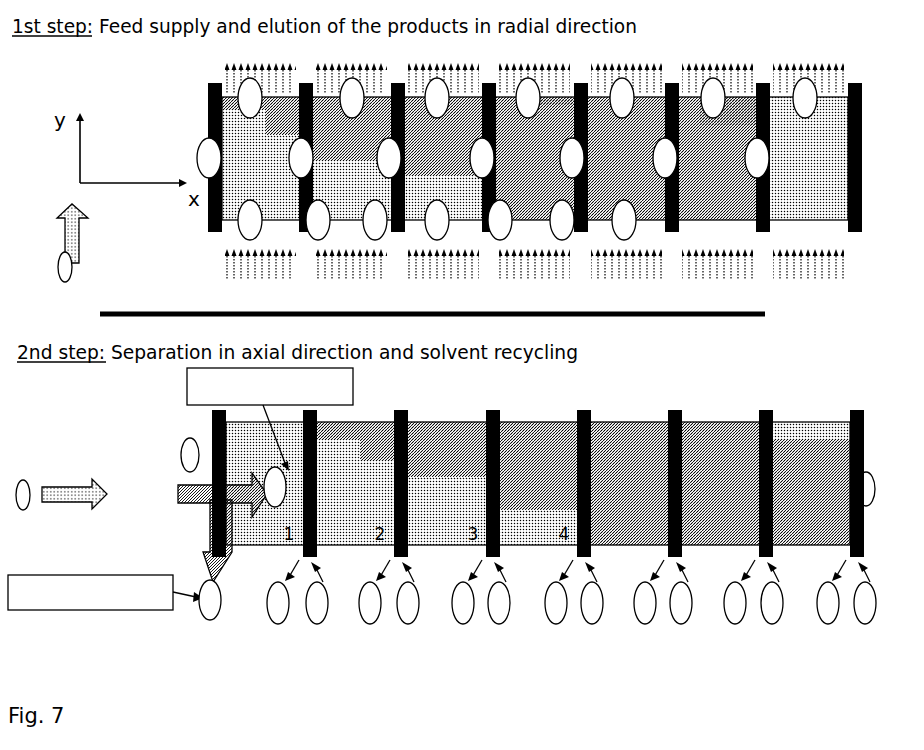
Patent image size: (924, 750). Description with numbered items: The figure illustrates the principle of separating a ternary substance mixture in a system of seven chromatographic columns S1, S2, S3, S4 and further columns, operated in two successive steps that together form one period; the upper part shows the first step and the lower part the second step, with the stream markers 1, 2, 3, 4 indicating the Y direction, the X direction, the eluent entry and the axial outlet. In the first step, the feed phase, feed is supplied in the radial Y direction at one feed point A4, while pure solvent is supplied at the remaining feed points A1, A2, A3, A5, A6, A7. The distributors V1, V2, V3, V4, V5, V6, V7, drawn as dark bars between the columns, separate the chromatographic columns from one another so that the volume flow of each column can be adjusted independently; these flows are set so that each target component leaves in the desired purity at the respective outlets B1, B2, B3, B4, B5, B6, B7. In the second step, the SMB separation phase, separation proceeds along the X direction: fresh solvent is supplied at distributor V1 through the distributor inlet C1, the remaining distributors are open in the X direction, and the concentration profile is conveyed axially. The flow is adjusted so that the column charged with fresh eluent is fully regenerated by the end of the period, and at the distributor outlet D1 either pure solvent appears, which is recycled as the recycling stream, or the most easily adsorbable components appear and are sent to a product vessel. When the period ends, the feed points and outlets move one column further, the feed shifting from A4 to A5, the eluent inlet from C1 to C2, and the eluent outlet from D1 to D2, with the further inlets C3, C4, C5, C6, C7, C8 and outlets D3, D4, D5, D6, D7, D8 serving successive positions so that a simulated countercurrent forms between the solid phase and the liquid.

The Y direction (radial flow) stream 1 is at (68, 252).
The X direction (axial flow) stream 2 is at (68, 514).
The fresh eluent / feed inlet stream 3 is at (190, 455).
The outlet stream 4 is at (866, 489).
The outlet B1 is at (250, 98).
The outlet B2 is at (352, 98).
The outlet B3 is at (437, 98).
The outlet B4 is at (528, 98).
The outlet B5 is at (622, 98).
The outlet B6 is at (713, 98).
The outlet B7 is at (805, 98).
The distributor V1 is at (209, 158).
The distributor V2 is at (301, 158).
The distributor V3 is at (389, 158).
The distributor V4 is at (482, 158).
The distributor V5 is at (572, 158).
The distributor V6 is at (665, 158).
The distributor V7 is at (757, 158).
The feed point A1 is at (250, 220).
The feed point A2 is at (318, 220).
The feed point A3 is at (375, 220).
The feed point A4 is at (437, 220).
The feed point A5 is at (500, 220).
The feed point A6 is at (562, 220).
The feed point A7 is at (624, 220).
The chromatographic column S1 is at (260, 158).
The chromatographic column S2 is at (350, 158).
The chromatographic column S3 is at (426, 158).
The chromatographic column S4 is at (505, 158).
The distributor inlet C1 is at (270, 437).
The distributor inlet C2 is at (317, 593).
The eluent inlet C3 is at (408, 593).
The eluent inlet C4 is at (499, 593).
The eluent inlet C5 is at (592, 593).
The eluent inlet C6 is at (681, 593).
The eluent inlet C7 is at (772, 593).
The eluent inlet C8 is at (865, 593).
The distributor outlet D1 is at (114, 597).
The distributor outlet D2 is at (283, 592).
The outlet D3 is at (374, 592).
The outlet D4 is at (467, 592).
The outlet D5 is at (559, 592).
The outlet D6 is at (649, 592).
The outlet D7 is at (739, 592).
The outlet D8 is at (831, 592).